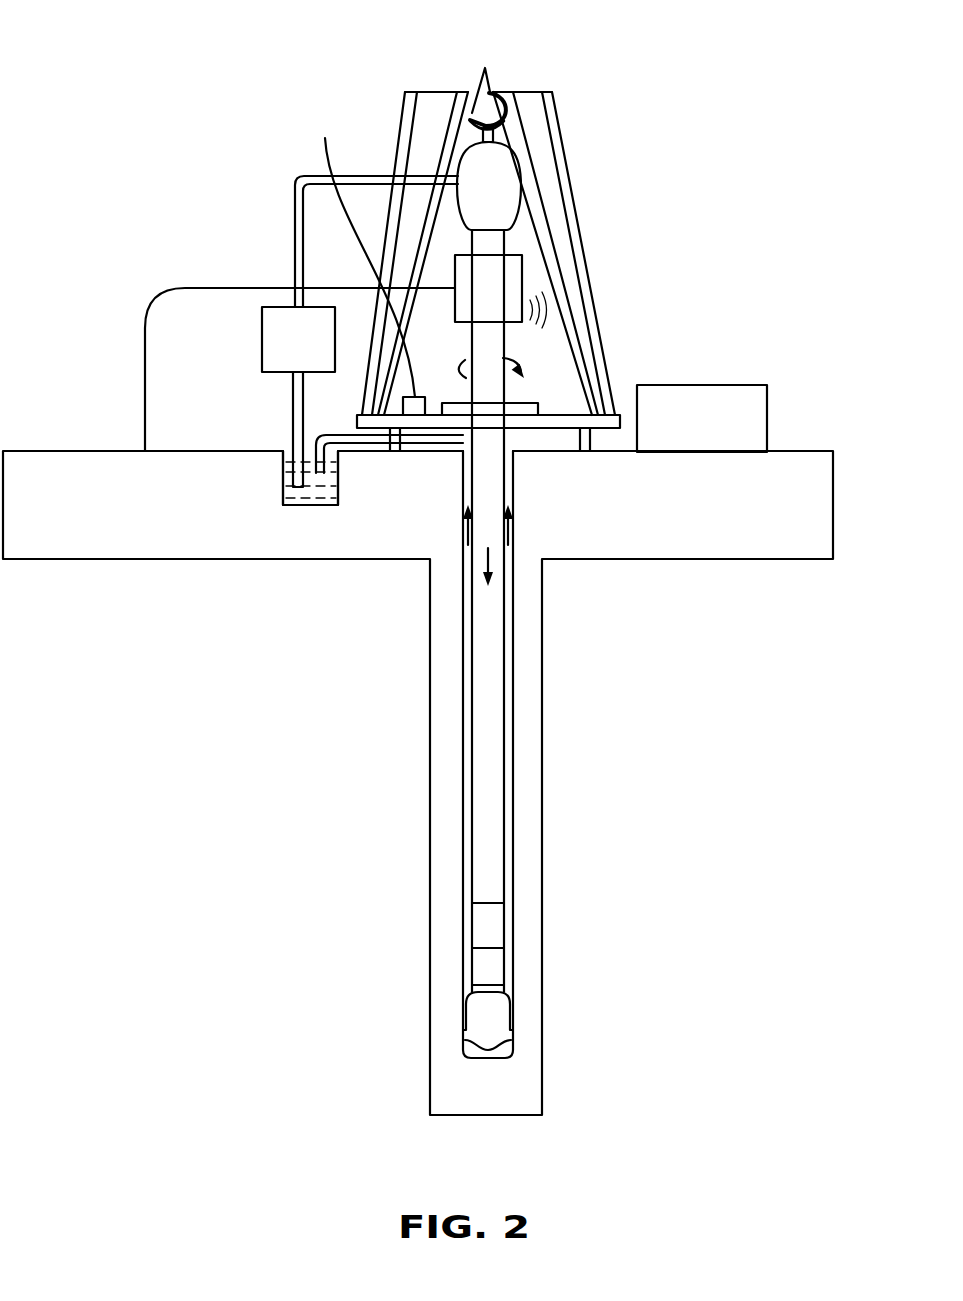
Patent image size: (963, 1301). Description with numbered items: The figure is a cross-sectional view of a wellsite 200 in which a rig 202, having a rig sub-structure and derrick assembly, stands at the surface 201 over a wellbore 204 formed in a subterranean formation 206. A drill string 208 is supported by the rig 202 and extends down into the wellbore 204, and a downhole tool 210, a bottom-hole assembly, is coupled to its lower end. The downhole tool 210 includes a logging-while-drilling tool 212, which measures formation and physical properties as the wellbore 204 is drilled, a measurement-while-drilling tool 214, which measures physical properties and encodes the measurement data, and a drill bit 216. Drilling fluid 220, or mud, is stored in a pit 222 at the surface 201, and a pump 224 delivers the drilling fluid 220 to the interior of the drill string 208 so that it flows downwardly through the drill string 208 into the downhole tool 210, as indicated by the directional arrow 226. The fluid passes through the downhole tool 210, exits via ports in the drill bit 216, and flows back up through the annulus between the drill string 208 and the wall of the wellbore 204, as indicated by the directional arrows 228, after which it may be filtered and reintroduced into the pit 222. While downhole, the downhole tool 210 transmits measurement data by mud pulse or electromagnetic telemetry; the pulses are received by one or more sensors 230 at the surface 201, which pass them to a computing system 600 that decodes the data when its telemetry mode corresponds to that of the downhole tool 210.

The wellsite 200 is at (130, 36).
The surface 201 is at (834, 471).
The rig 202 is at (598, 189).
The wellbore 204 is at (508, 436).
The subterranean formation 206 is at (224, 540).
The drill string 208 is at (486, 436).
The downhole tool 210 is at (350, 705).
The logging-while-drilling (LWD) tool 212 is at (490, 920).
The measurement-while-drilling (MWD) tool 214 is at (490, 965).
The drill bit 216 is at (468, 1015).
The drilling fluid 220 is at (310, 506).
The pit 222 is at (279, 441).
The pump 224 is at (280, 307).
The directional arrow 226 is at (488, 568).
The directional arrows 228 is at (466, 528).
The sensors 230 is at (362, 260).
The computing system 600 is at (695, 385).